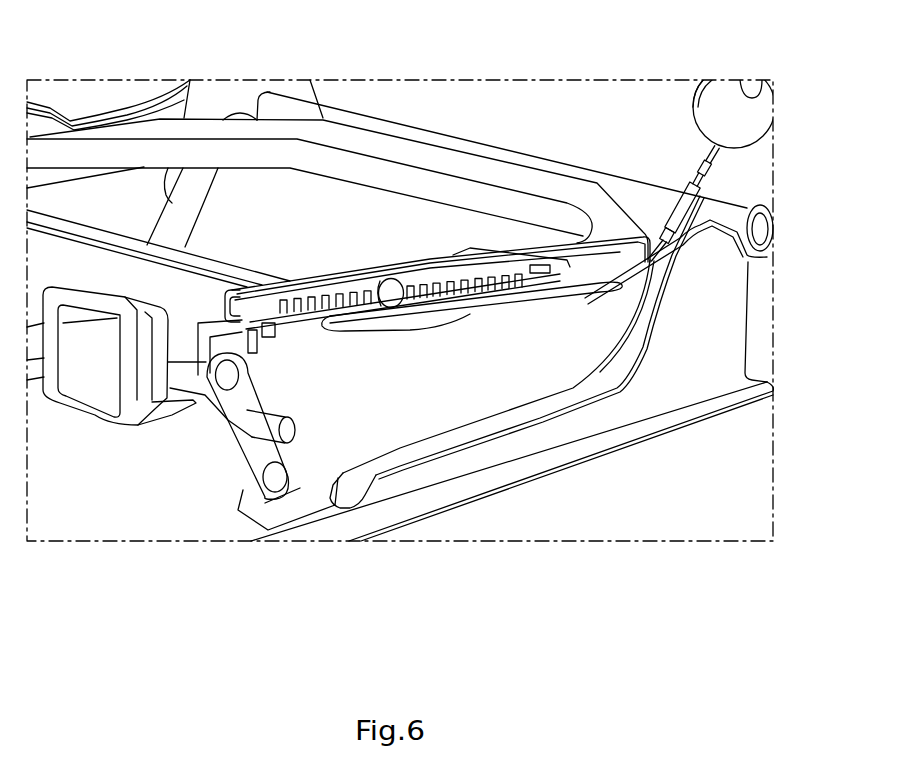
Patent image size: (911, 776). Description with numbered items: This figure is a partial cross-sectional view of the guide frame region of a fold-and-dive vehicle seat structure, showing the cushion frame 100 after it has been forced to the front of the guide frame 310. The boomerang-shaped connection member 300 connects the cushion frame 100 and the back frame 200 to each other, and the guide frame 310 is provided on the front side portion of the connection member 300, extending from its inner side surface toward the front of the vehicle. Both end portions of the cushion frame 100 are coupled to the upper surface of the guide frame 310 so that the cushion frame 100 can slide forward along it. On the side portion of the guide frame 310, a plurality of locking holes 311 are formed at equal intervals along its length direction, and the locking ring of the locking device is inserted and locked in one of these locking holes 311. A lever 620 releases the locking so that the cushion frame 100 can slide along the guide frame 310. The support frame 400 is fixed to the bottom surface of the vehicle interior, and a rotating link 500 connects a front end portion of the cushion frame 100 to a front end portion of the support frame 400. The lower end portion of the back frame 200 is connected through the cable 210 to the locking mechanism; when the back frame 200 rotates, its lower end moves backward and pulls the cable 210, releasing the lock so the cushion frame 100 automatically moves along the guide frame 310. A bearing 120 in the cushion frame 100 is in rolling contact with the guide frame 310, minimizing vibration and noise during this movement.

The cushion frame 100 is at (316, 172).
The bearing 120 is at (392, 278).
The back frame 200 is at (762, 122).
The cable 210 is at (680, 248).
The connection member 300 is at (590, 283).
The guide frame 310 is at (468, 296).
The locking holes 311 is at (440, 283).
The support frame 400 is at (585, 455).
The rotating link 500 is at (255, 445).
The lever 620 is at (92, 398).